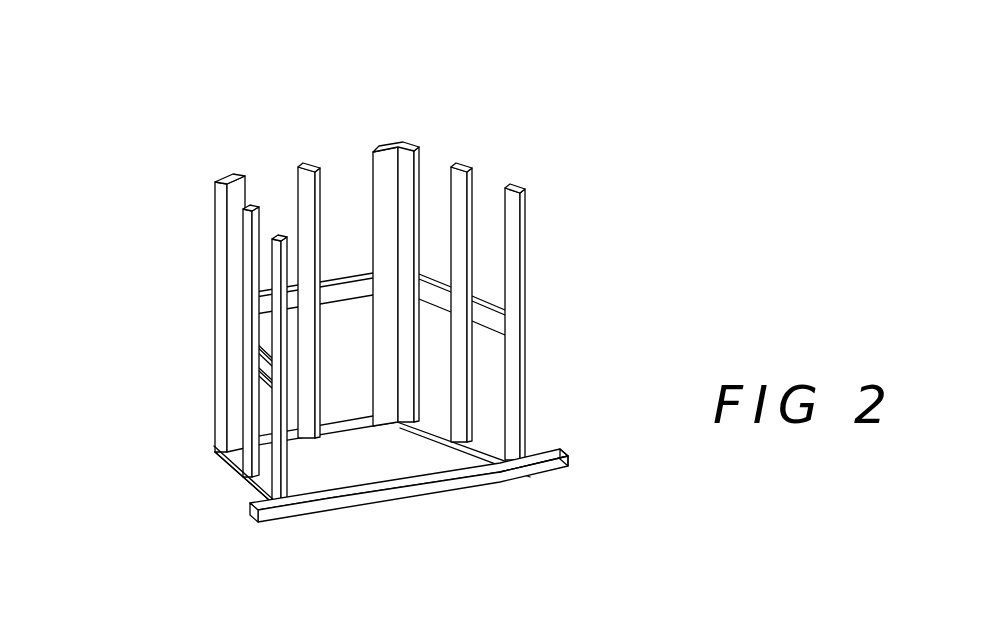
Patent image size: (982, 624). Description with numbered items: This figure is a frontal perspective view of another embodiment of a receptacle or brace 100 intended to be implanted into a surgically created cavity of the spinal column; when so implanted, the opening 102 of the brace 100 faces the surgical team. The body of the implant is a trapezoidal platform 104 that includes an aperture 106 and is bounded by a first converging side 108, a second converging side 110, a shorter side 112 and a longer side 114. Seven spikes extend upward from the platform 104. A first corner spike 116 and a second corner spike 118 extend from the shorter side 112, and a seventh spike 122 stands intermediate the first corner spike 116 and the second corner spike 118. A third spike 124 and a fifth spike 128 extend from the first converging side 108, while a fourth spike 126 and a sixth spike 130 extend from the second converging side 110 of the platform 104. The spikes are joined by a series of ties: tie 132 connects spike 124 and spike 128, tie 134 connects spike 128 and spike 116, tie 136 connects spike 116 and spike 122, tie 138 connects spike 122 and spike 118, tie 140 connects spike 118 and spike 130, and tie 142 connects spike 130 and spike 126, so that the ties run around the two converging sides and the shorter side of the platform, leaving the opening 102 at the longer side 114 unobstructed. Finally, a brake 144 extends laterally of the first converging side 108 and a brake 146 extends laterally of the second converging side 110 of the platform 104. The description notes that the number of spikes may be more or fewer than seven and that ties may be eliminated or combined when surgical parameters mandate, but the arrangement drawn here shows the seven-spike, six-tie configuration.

The receptacle or brace 100 is at (588, 367).
The opening 102 is at (448, 368).
The trapezoidal platform 104 is at (485, 449).
The aperture 106 is at (406, 457).
The first converging side 108 is at (520, 468).
The second converging side 110 is at (222, 462).
The shorter side 112 is at (394, 519).
The longer side 114 is at (474, 547).
The first corner spike 116 is at (413, 146).
The second corner spike 118 is at (219, 186).
The seventh spike 122 is at (308, 163).
The third spike 124 is at (522, 190).
The fourth spike 126 is at (272, 251).
The fifth spike 128 is at (468, 170).
The sixth spike 130 is at (247, 210).
The tie 132 is at (492, 303).
The tie 134 is at (437, 278).
The tie 136 is at (347, 272).
The tie 138 is at (298, 278).
The tie 140 is at (237, 337).
The tie 142 is at (263, 365).
The brake 144 is at (568, 458).
The brake 146 is at (249, 514).